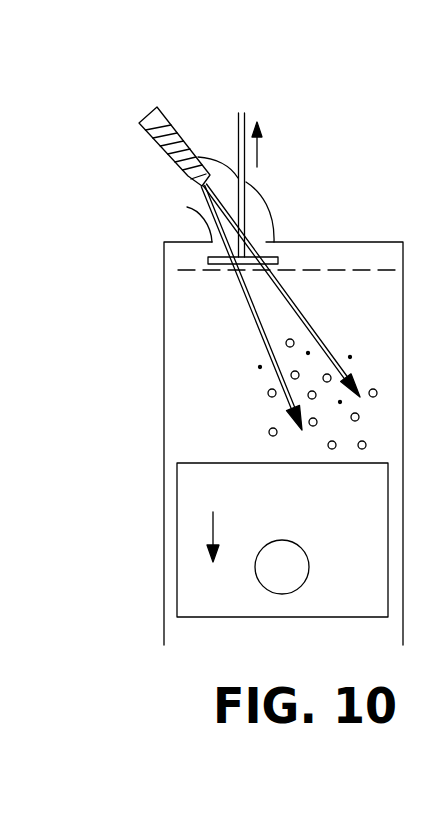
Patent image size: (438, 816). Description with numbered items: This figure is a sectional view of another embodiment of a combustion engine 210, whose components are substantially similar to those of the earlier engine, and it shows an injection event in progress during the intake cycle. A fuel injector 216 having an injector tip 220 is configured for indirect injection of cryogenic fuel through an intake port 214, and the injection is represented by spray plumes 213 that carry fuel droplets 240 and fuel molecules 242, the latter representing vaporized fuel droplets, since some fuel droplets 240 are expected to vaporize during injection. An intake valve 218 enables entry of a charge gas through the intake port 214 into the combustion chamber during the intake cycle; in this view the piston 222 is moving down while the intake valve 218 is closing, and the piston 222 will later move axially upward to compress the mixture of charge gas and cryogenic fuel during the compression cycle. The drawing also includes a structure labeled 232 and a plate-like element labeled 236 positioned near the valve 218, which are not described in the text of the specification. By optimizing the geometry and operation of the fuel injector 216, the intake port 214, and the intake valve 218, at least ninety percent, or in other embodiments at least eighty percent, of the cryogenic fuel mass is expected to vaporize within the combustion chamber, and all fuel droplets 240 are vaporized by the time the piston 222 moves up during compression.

The combustion engine 210 is at (350, 102).
The spray plumes 213 is at (257, 317).
The intake port 214 is at (187, 207).
The fuel injector 216 is at (166, 118).
The intake valve 218 is at (243, 207).
The injector tip 220 is at (208, 188).
The piston 222 is at (338, 512).
The container 232 is at (177, 272).
The deflector plate 236 is at (267, 250).
The fuel droplets 240 is at (268, 394).
The fuel molecules 242 is at (258, 368).